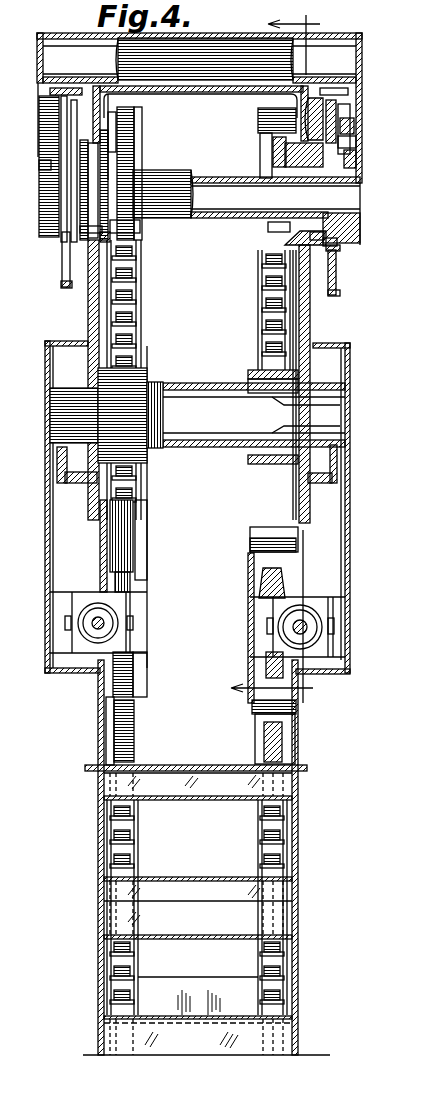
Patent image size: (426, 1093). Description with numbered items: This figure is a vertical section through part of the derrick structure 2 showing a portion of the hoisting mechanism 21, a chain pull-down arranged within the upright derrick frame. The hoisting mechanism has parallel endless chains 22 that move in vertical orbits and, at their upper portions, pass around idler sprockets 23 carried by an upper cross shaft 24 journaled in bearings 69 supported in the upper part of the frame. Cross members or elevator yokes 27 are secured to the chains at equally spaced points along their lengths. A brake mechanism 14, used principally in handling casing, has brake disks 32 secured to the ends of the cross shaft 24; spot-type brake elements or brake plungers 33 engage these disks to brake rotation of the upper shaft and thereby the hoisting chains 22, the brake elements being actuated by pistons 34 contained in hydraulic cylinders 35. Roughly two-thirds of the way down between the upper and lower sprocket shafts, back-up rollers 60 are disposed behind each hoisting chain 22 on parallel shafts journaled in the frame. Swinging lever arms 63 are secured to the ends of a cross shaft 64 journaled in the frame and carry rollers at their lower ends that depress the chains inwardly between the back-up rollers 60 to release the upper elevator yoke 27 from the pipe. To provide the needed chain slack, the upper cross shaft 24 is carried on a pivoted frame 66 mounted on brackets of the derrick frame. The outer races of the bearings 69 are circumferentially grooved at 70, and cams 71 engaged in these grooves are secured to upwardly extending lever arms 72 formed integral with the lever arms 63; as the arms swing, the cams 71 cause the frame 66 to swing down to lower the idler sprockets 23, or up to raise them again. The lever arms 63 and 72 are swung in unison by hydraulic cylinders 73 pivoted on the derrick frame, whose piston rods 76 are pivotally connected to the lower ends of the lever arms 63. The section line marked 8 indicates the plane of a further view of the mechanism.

The derrick structure 2 is at (307, 849).
The section line 8 is at (282, 358).
The brake mechanism 14 is at (342, 275).
The hoisting mechanism 21 is at (149, 855).
The endless chains 22 is at (258, 319).
The idler sprockets 23 is at (262, 131).
The cross shaft 24 is at (190, 181).
The cross members or elevator yokes 27 is at (207, 979).
The brake disks 32 is at (66, 287).
The brake elements or brake plungers 33 is at (352, 133).
The pistons 34 is at (346, 113).
The hydraulic cylinders 35 is at (82, 118).
The back-up rollers 60 is at (122, 533).
The swinging lever arms 63 is at (66, 479).
The cross shaft 64 is at (219, 449).
The pivoted frame 66 is at (364, 53).
The bearings 69 is at (323, 237).
The circumferential grooves 70 is at (98, 227).
The cams 71 is at (96, 247).
The lever arms 72 is at (90, 290).
The hydraulic cylinders 73 is at (80, 609).
The piston rods 76 is at (94, 624).